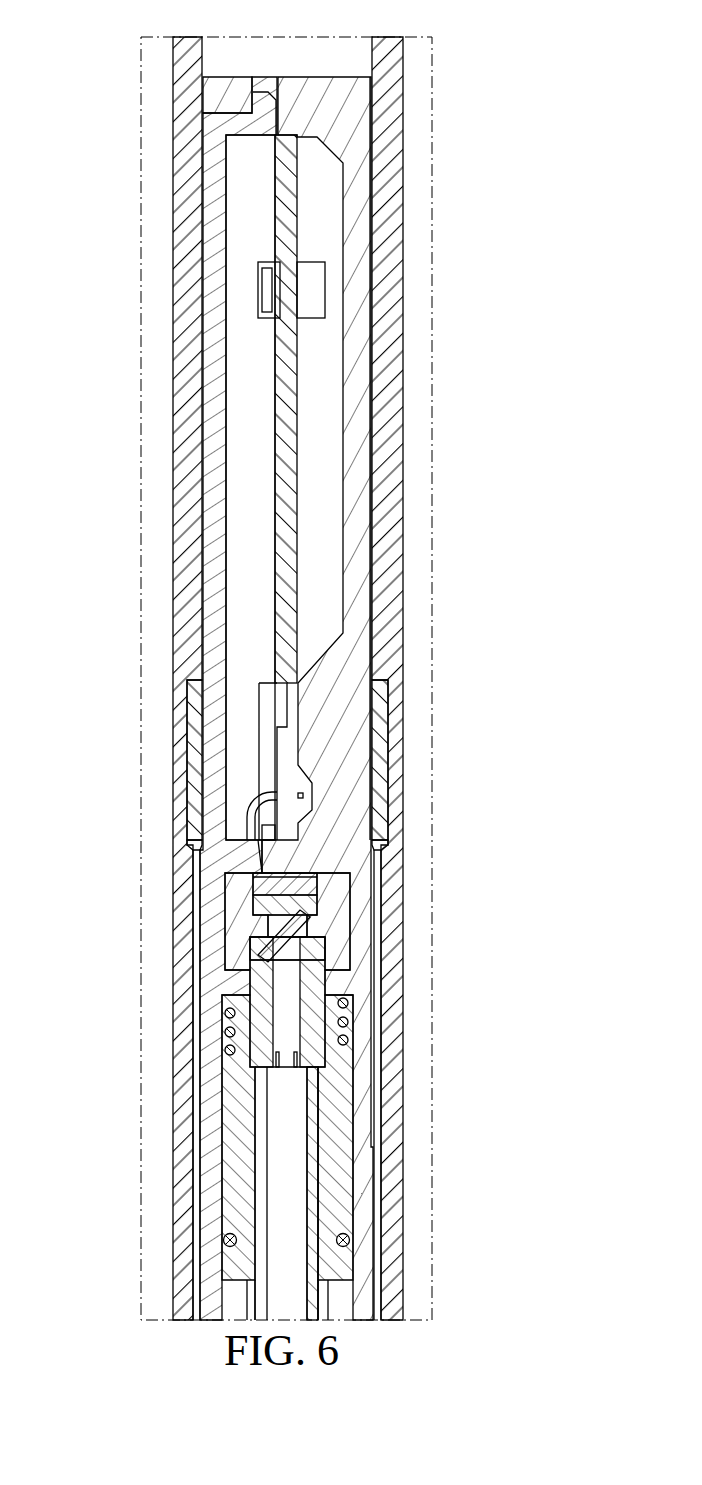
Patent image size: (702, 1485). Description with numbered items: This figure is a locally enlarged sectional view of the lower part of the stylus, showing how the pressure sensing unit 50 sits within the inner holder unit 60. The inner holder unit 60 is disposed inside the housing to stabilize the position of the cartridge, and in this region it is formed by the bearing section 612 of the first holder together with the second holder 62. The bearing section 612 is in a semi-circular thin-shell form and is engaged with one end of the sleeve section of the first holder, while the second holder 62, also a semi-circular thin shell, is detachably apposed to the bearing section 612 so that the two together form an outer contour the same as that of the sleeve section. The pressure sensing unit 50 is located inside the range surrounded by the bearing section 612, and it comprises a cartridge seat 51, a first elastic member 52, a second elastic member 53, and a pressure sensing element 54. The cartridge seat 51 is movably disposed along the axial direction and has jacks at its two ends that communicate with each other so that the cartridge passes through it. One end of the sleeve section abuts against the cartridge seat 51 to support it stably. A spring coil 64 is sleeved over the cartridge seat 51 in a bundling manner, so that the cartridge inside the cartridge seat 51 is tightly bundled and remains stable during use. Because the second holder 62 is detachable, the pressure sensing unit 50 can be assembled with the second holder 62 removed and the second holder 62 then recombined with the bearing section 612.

The inner holder unit 60 is at (204, 343).
The bearing section 612 is at (362, 368).
The second holder 62 is at (222, 932).
The pressure sensing unit 50 is at (385, 926).
The pressure sensing element 54 is at (308, 905).
The first elastic member 52 is at (303, 950).
The second elastic member 53 is at (354, 1007).
The cartridge seat 51 is at (337, 1108).
The spring coil 64 is at (223, 1232).